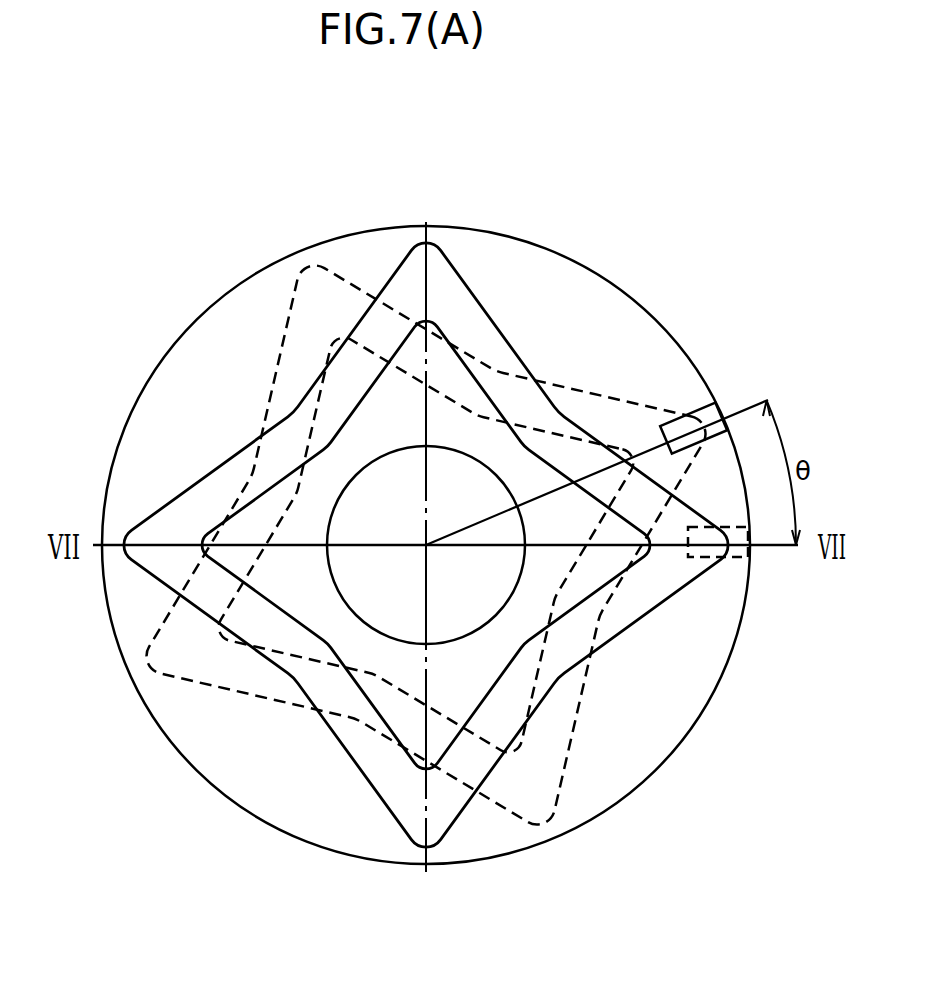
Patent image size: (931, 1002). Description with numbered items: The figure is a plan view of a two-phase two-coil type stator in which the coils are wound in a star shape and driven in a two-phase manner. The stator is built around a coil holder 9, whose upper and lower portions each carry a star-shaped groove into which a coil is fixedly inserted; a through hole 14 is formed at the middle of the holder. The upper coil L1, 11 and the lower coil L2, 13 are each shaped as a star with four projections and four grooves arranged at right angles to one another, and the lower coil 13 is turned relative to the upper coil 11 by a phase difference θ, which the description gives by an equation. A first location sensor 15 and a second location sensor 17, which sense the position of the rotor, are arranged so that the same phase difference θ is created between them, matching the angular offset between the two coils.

The coil holder 9 is at (718, 691).
The upper coil 11 is at (366, 777).
The lower coil 13 is at (568, 759).
The through hole 14 is at (351, 594).
The location sensor 15 is at (718, 413).
The location sensor 17 is at (741, 559).
The upper coil L1 is at (440, 246).
The lower coil L2 is at (638, 413).